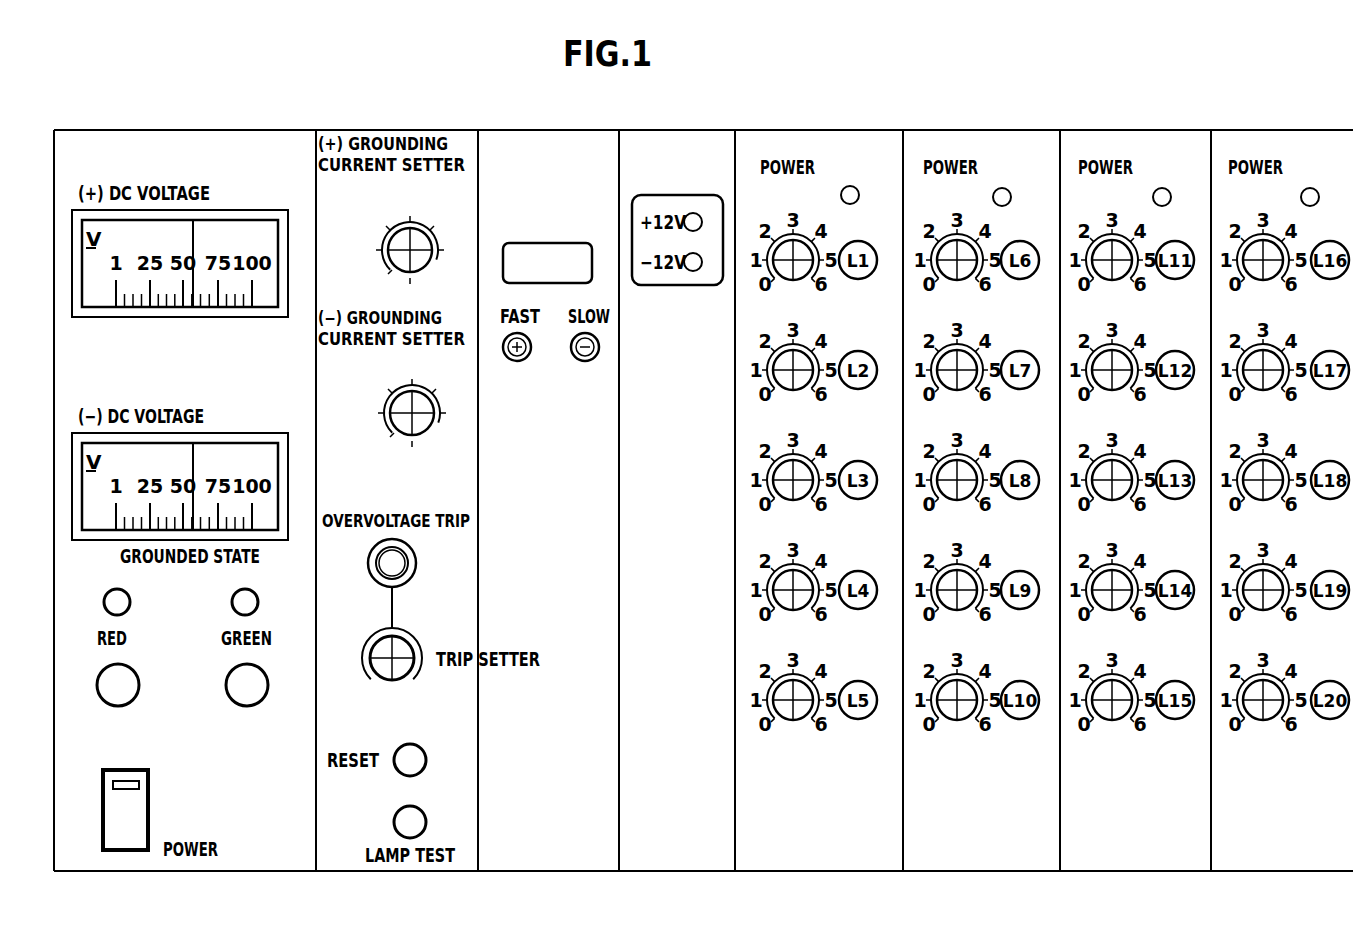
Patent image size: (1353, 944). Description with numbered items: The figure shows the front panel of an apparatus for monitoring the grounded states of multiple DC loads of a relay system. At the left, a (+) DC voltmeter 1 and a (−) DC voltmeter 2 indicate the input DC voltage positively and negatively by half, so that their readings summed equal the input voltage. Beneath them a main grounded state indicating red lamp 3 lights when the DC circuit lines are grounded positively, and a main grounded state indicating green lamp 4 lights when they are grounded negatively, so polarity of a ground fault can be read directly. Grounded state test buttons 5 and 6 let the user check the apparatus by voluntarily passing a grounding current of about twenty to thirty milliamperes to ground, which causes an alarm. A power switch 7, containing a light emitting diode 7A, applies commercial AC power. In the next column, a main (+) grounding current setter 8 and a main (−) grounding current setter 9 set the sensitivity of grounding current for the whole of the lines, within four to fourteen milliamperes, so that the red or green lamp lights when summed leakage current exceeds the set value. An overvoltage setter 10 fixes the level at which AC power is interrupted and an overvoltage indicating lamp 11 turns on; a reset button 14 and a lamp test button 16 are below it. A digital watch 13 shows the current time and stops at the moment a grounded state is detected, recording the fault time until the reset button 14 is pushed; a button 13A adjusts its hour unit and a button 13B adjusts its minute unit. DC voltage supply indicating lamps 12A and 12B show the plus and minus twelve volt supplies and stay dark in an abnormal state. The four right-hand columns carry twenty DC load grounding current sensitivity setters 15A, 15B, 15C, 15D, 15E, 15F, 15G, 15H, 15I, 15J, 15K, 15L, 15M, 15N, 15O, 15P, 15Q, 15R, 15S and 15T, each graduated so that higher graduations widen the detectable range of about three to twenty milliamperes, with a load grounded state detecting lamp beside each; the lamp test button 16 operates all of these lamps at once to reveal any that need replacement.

The (+) DC voltmeter 1 is at (268, 212).
The (−) DC voltmeter 2 is at (268, 435).
The main grounded state indicating red lamp 3 is at (130, 604).
The main grounded state indicating green lamp 4 is at (257, 606).
The grounded state test button 5 is at (137, 692).
The grounded state test button 6 is at (262, 700).
The power switch 7 is at (143, 828).
The light emitting diode 7A is at (126, 785).
The main (+) grounding current setter 8 is at (422, 262).
The main (−) grounding current setter 9 is at (424, 426).
The overvoltage setter 10 is at (416, 642).
The overvoltage indicating lamp 11 is at (406, 560).
The DC voltage supply indicating lamp 12A is at (693, 213).
The DC voltage supply indicating lamp 12B is at (693, 271).
The digital watch 13 is at (552, 242).
The button for adjusting an hour unit 13A is at (517, 361).
The button for adjusting a minute unit 13B is at (585, 361).
The reset button 14 is at (424, 750).
The lamp test button 16 is at (427, 822).
The DC load grounding current sensitivity setter 15A is at (799, 270).
The DC load grounding current sensitivity setter 15B is at (799, 380).
The DC load grounding current sensitivity setter 15C is at (799, 490).
The DC load grounding current sensitivity setter 15D is at (799, 600).
The DC load grounding current sensitivity setter 15E is at (799, 710).
The DC load grounding current sensitivity setter 15F is at (963, 270).
The DC load grounding current sensitivity setter 15G is at (963, 380).
The DC load grounding current sensitivity setter 15H is at (963, 490).
The DC load grounding current sensitivity setter 15I is at (963, 600).
The DC load grounding current sensitivity setter 15J is at (963, 710).
The DC load grounding current sensitivity setter 15K is at (1118, 270).
The DC load grounding current sensitivity setter 15L is at (1118, 380).
The DC load grounding current sensitivity setter 15M is at (1118, 490).
The DC load grounding current sensitivity setter 15N is at (1118, 600).
The DC load grounding current sensitivity setter 15O is at (1118, 710).
The DC load grounding current sensitivity setter 15P is at (1269, 270).
The DC load grounding current sensitivity setter 15Q is at (1269, 380).
The DC load grounding current sensitivity setter 15R is at (1269, 490).
The DC load grounding current sensitivity setter 15S is at (1269, 600).
The DC load grounding current sensitivity setter 15T is at (1269, 710).